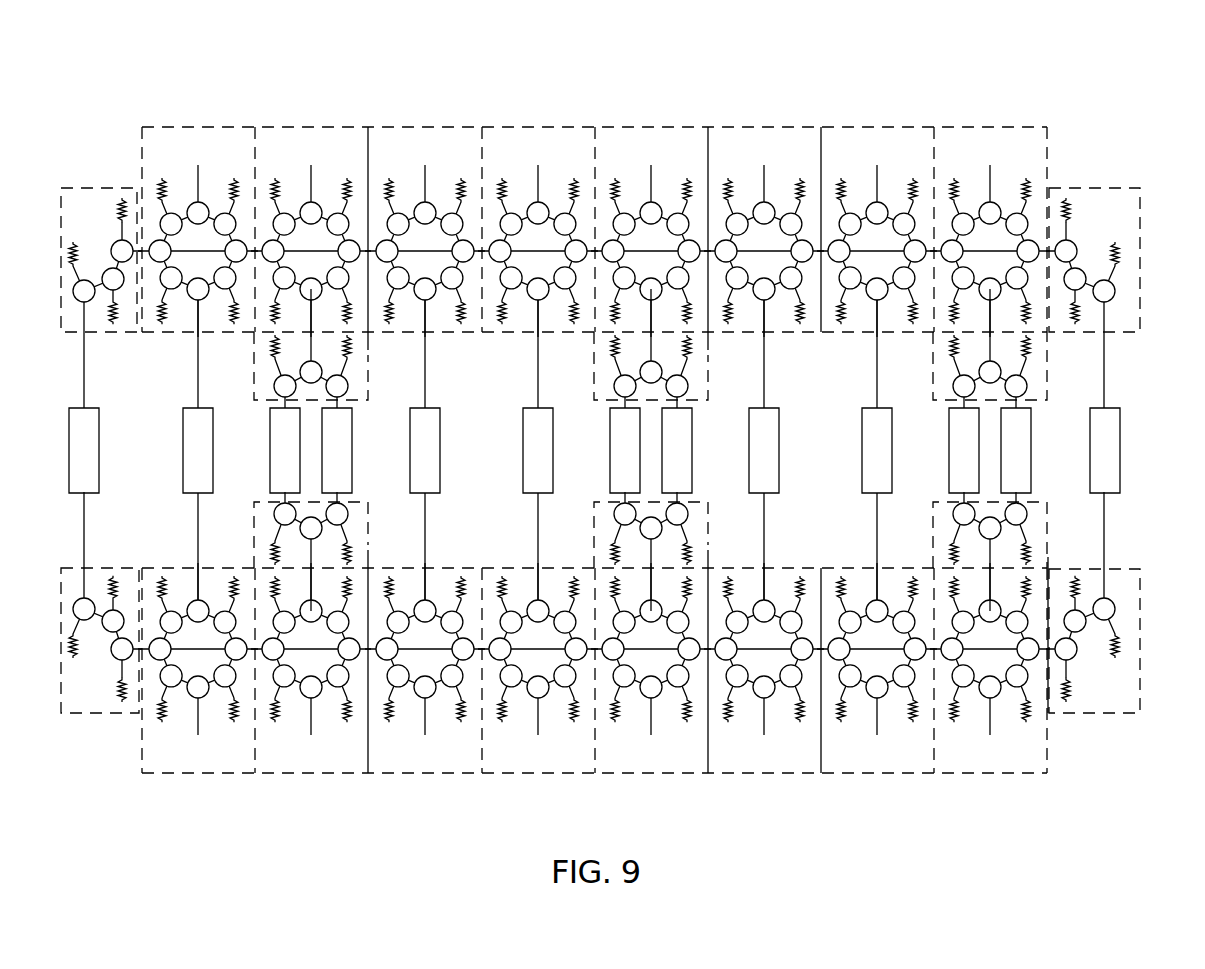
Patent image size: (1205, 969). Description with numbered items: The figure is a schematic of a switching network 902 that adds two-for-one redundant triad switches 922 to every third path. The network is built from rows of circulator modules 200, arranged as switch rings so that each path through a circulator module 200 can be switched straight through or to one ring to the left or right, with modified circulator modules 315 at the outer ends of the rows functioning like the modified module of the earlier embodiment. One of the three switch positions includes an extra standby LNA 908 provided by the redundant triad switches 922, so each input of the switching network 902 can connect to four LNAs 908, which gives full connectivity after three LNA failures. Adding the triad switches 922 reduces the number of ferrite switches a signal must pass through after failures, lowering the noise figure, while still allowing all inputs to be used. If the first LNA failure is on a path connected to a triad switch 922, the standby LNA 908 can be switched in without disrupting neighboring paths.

The switching network 902 is at (1089, 91).
The circulator module 200 is at (594, 454).
The modified circulator module 315 is at (600, 453).
The LNA 908 is at (594, 452).
The 2 for 1 redundant triad switch 922 is at (652, 450).